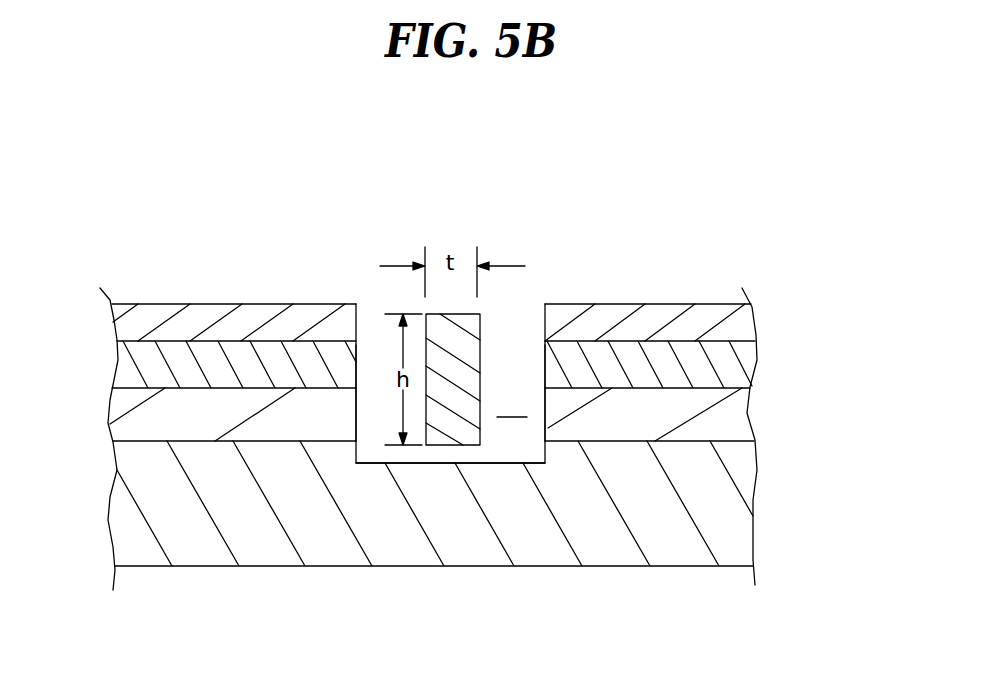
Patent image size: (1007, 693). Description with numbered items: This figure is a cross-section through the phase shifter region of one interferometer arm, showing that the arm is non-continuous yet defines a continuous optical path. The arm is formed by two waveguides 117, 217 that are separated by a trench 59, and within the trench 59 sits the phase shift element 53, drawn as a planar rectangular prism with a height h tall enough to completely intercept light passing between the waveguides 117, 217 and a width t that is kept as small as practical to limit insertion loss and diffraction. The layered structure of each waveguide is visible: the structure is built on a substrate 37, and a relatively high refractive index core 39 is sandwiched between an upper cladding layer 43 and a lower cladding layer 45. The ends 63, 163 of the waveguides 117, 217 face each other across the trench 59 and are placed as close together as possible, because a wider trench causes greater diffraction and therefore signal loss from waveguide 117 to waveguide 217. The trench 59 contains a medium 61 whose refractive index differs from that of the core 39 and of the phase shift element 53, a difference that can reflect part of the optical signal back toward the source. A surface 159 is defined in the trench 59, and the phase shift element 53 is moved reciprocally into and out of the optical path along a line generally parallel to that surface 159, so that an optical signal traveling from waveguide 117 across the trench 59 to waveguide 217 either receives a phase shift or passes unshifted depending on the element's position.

The waveguide 117 is at (222, 292).
The waveguide 217 is at (608, 292).
The upper cladding layer 43 is at (742, 327).
The core 39 is at (748, 362).
The lower cladding layer 45 is at (120, 403).
The substrate 37 is at (122, 518).
The trench 59 is at (373, 316).
The phase shift element 53 is at (476, 342).
The end of waveguide 63 is at (356, 363).
The end of waveguide 163 is at (545, 364).
The medium 61 is at (512, 403).
The surface 159 is at (494, 464).